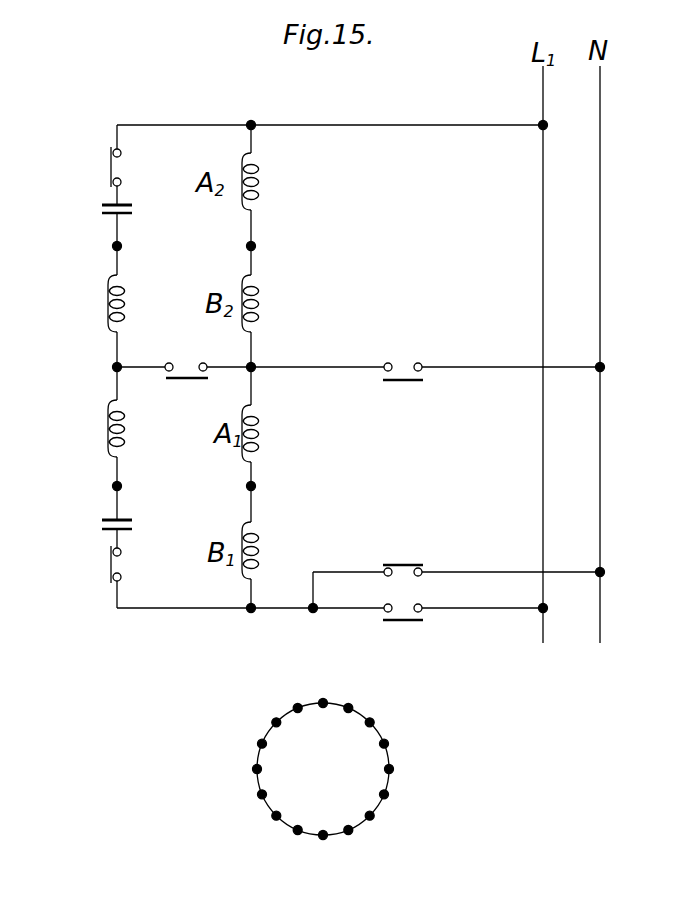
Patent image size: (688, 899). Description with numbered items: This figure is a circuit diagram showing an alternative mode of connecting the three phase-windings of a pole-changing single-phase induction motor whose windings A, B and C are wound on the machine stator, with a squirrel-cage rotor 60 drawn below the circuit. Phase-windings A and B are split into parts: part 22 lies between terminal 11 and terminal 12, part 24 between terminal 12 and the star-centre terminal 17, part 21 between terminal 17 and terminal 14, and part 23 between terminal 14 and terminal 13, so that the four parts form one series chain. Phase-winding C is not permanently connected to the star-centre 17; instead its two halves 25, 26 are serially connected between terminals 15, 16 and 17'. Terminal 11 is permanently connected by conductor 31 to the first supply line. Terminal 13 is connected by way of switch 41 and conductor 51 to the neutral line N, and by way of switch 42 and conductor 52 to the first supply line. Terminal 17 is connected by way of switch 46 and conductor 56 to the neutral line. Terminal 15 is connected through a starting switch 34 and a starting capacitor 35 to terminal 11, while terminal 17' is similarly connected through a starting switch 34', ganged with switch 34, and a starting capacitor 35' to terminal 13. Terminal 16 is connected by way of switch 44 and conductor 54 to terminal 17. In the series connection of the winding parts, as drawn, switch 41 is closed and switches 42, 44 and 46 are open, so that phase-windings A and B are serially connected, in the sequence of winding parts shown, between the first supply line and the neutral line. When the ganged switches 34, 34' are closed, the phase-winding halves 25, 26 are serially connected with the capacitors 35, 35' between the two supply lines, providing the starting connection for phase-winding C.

The terminal 11 is at (254, 122).
The terminal 12 is at (255, 245).
The terminal 13 is at (254, 612).
The terminal 14 is at (256, 486).
The terminal 15 is at (122, 246).
The terminal 16 is at (110, 367).
The star-centre terminal 17 is at (277, 355).
The terminal 17' is at (145, 485).
The phase-winding part 21 is at (259, 432).
The phase-winding part 22 is at (259, 184).
The phase-winding part 23 is at (259, 537).
The phase-winding part 24 is at (259, 303).
The phase-winding half 25 is at (125, 300).
The phase-winding half 26 is at (108, 437).
The conductor 31 is at (493, 124).
The starting switch 34 is at (89, 166).
The starting switch 34' is at (84, 571).
The starting capacitor 35 is at (90, 222).
The starting capacitor 35' is at (90, 535).
The switch 41 is at (402, 564).
The switch 42 is at (403, 620).
The switch 44 is at (188, 378).
The switch 46 is at (403, 380).
The conductor 51 is at (475, 570).
The conductor 52 is at (503, 608).
The conductor 54 is at (148, 368).
The conductor 56 is at (477, 366).
The squirrel-cage rotor 60 is at (377, 724).